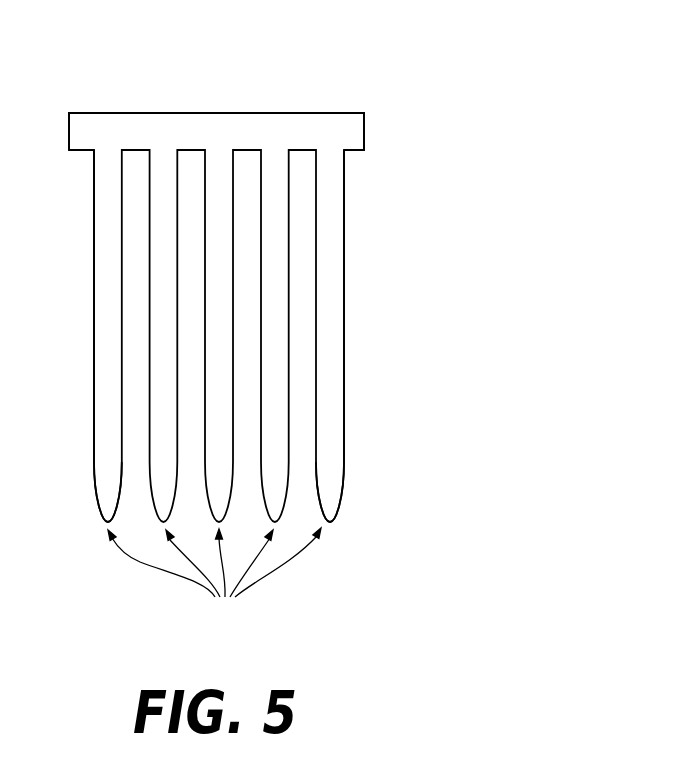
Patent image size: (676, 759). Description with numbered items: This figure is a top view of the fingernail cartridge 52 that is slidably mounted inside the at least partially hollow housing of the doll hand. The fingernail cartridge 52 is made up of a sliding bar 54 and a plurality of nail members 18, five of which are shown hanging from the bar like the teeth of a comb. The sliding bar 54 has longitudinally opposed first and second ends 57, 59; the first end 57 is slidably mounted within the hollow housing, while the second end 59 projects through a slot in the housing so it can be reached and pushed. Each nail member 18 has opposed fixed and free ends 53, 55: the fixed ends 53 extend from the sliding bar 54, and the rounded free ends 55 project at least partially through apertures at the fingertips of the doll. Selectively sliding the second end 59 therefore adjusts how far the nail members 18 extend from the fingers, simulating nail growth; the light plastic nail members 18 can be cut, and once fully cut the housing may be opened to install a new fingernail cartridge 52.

The fingernail cartridge 52 is at (462, 277).
The fixed ends 53 is at (101, 184).
The sliding bar 54 is at (268, 113).
The free ends 55 is at (106, 500).
The first end 57 is at (80, 113).
The second end 59 is at (364, 130).
The nail members 18 is at (214, 578).